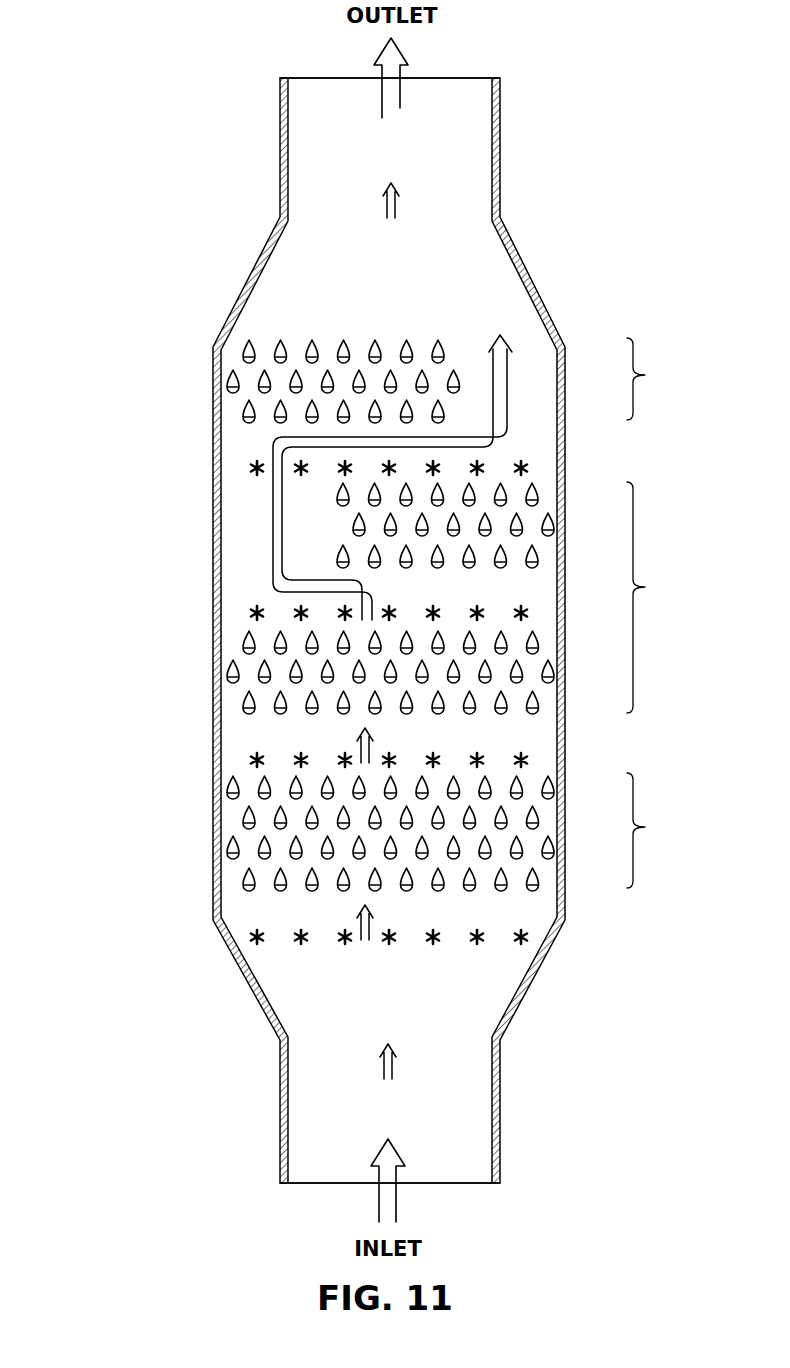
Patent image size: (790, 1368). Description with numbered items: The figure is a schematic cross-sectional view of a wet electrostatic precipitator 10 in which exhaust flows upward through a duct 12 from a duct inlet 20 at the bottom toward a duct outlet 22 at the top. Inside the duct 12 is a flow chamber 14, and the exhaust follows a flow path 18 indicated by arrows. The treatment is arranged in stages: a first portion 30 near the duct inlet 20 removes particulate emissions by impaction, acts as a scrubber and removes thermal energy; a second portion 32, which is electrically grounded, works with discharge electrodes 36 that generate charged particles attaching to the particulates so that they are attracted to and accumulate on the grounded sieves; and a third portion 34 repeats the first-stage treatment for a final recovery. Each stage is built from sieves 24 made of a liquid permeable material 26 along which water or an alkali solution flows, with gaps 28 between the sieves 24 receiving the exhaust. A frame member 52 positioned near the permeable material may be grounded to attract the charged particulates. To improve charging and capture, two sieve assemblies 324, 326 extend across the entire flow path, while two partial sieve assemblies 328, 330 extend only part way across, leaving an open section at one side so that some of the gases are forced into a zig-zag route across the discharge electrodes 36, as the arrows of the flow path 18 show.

The wet electrostatic precipitator 10 is at (104, 147).
The duct 12 is at (449, 292).
The flow chamber 14 is at (387, 1028).
The flow path 18 is at (400, 108).
The duct inlet 20 is at (301, 1184).
The duct outlet 22 is at (482, 78).
The sieves 24 is at (350, 342).
The liquid permeable material 26 is at (436, 348).
The gaps 28 is at (268, 348).
The first portion of the sieve assembly 30 is at (651, 830).
The second portion of the sieve assembly 32 is at (652, 597).
The third portion of the sieve assembly 34 is at (652, 378).
The discharge electrodes 36 is at (252, 474).
The frame member 52 is at (231, 387).
The sieve assembly 324 is at (518, 908).
The sieve assembly 326 is at (518, 720).
The partial sieve assembly 328 is at (522, 582).
The partial sieve assembly 330 is at (320, 316).